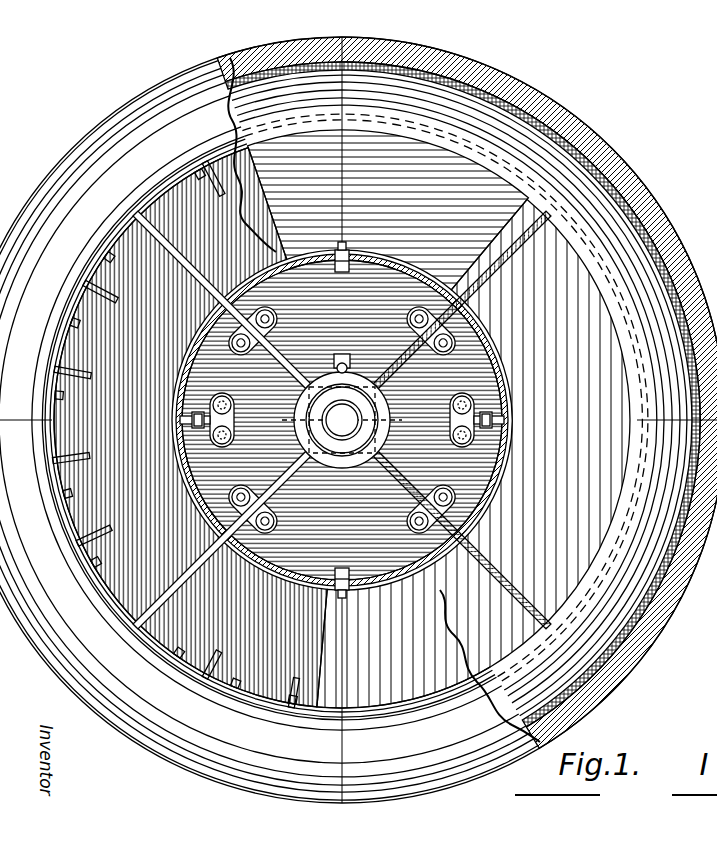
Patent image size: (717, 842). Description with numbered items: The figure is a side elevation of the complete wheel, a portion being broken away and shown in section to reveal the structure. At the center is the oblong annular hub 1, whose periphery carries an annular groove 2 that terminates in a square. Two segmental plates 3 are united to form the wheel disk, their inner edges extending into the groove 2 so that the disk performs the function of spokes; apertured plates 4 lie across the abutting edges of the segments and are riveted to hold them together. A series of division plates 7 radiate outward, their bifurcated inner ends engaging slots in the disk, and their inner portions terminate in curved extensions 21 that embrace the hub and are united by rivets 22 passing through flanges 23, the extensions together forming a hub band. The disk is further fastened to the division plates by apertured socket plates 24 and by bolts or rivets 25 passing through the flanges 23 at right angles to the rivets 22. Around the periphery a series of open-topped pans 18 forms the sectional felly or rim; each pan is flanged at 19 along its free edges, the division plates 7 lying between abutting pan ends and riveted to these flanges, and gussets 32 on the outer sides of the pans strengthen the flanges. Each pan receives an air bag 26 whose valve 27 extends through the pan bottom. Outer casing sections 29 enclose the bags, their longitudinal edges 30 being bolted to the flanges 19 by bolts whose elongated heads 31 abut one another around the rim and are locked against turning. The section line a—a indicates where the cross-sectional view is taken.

The hub 1 is at (342, 404).
The annular groove 2 is at (353, 356).
The segmental plate 3 is at (342, 420).
The apertured plate 4 is at (342, 424).
The division plate 7 is at (342, 420).
The pan 18 is at (301, 427).
The flange 19 is at (175, 434).
The curved extension 21 is at (330, 448).
The rivet 22 is at (342, 456).
The flange 23 is at (339, 475).
The socket plate 24 is at (342, 429).
The bolt or rivet 25 is at (342, 410).
The air bag 26 is at (458, 395).
The valve 27 is at (420, 427).
The outer casing section 29 is at (358, 420).
The longitudinal edge 30 is at (350, 419).
The elongated head 31 is at (271, 416).
The gusset 32 is at (105, 245).
The section line a is at (300, 310).